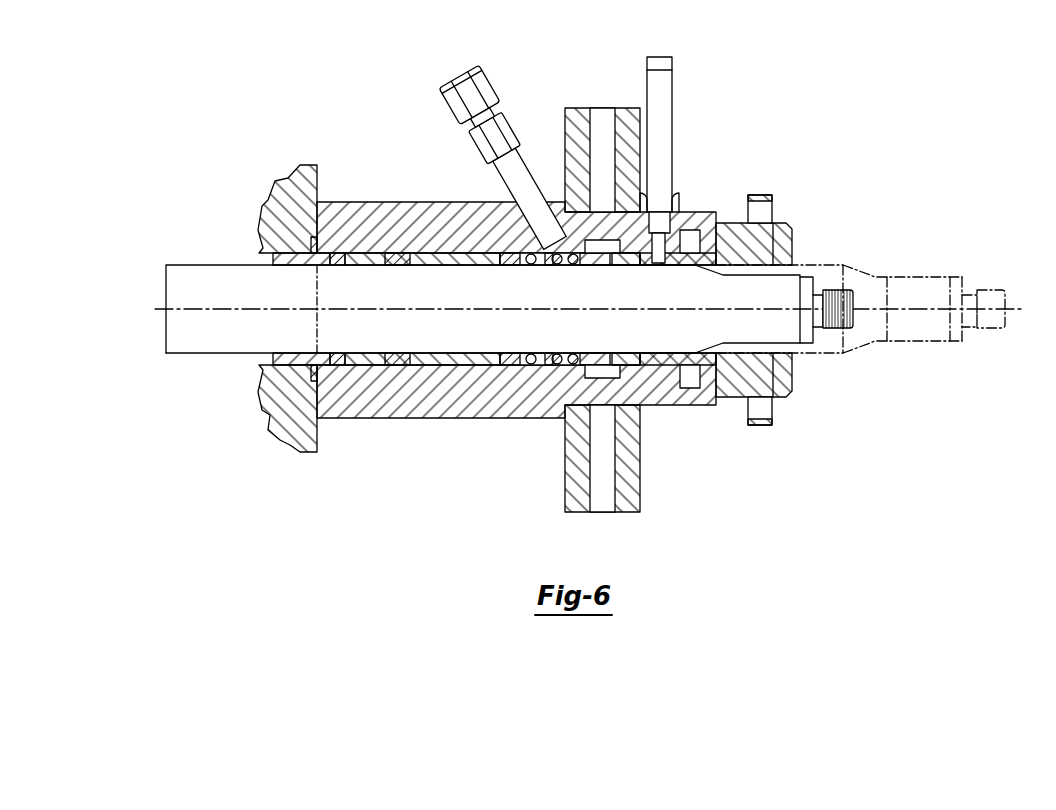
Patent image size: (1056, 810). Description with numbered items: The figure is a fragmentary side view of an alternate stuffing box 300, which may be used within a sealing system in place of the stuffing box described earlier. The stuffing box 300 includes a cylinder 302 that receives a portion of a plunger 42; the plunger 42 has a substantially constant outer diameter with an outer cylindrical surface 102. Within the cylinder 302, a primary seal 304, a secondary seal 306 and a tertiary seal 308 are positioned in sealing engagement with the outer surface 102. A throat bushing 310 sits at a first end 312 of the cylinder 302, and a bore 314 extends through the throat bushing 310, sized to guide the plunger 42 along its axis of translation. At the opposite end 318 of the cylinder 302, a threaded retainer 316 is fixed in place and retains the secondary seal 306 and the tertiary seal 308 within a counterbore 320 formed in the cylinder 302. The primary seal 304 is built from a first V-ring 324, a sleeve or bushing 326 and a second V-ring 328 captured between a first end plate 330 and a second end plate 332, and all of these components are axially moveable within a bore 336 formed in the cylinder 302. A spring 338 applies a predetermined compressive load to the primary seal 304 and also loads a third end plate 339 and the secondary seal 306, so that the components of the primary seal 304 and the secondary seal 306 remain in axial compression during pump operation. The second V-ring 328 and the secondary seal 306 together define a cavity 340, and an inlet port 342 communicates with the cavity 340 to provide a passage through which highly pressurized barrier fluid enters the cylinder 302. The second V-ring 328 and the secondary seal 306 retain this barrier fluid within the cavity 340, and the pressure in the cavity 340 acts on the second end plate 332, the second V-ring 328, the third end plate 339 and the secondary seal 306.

The plunger 42 is at (177, 277).
The outer cylindrical surface 102 is at (200, 357).
The stuffing box 300 is at (520, 284).
The cylinder 302 is at (353, 202).
The primary seal 304 is at (434, 250).
The secondary seal 306 is at (618, 352).
The tertiary seal 308 is at (693, 360).
The throat bushing 310 is at (300, 252).
The first end 312 is at (314, 208).
The bore 314 is at (278, 283).
The threaded retainer 316 is at (760, 232).
The opposite end 318 is at (736, 211).
The counterbore 320 is at (606, 242).
The first V-ring 324 is at (370, 360).
The bushing 326 is at (425, 360).
The second V-ring 328 is at (512, 358).
The first end plate 330 is at (345, 358).
The second end plate 332 is at (531, 358).
The bore 336 is at (398, 272).
The spring 338 is at (572, 265).
The third end plate 339 is at (590, 352).
The cavity 340 is at (560, 352).
The inlet port 342 is at (553, 245).